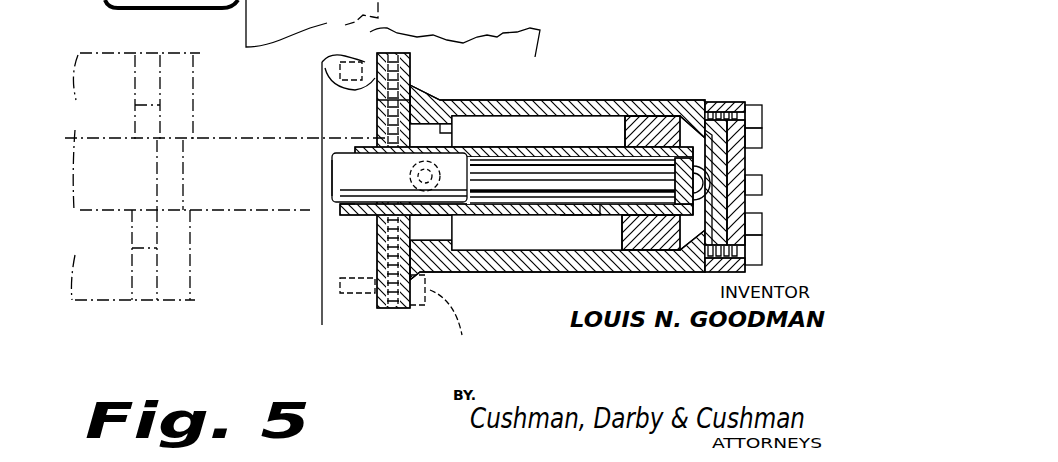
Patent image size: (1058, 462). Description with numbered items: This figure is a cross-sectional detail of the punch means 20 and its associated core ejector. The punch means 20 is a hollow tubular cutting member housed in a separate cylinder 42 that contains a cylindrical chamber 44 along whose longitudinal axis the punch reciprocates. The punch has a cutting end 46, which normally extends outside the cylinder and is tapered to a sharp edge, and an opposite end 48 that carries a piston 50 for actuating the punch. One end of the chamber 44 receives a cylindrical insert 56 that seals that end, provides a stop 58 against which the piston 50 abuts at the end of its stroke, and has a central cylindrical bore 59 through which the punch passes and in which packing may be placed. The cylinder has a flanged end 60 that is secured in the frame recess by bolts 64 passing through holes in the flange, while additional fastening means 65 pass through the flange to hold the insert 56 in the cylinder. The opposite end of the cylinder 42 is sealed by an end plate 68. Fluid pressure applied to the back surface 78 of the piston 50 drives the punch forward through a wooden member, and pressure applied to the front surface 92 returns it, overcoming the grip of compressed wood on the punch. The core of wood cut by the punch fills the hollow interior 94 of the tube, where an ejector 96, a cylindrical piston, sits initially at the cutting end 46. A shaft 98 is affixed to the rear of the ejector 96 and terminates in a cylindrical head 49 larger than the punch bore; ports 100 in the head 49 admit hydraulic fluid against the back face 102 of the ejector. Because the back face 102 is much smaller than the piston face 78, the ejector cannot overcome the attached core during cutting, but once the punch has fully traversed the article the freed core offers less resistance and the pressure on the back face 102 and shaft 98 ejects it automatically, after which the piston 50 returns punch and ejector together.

The punch means 20 is at (557, 195).
The separate cylinder 42 is at (470, 98).
The cylindrical chamber 44 is at (538, 131).
The cutting end 46 is at (330, 216).
The opposite end 48 is at (655, 163).
The cylindrical head 49 is at (748, 228).
The piston 50 is at (623, 133).
The cylindrical insert 56 is at (360, 130).
The stop 58 is at (458, 131).
The central cylindrical bore 59 is at (372, 224).
The flanged end 60 is at (336, 66).
The bolts 64 is at (405, 62).
The additional fastening means 65 is at (397, 60).
The end plate 68 is at (757, 158).
The back surface 78 is at (696, 268).
The front surface 92 is at (624, 252).
The hollow interior 94 is at (515, 272).
The ejector 96 is at (396, 189).
The shaft 98 is at (572, 213).
The ports 100 is at (713, 93).
The back face 102 is at (455, 233).